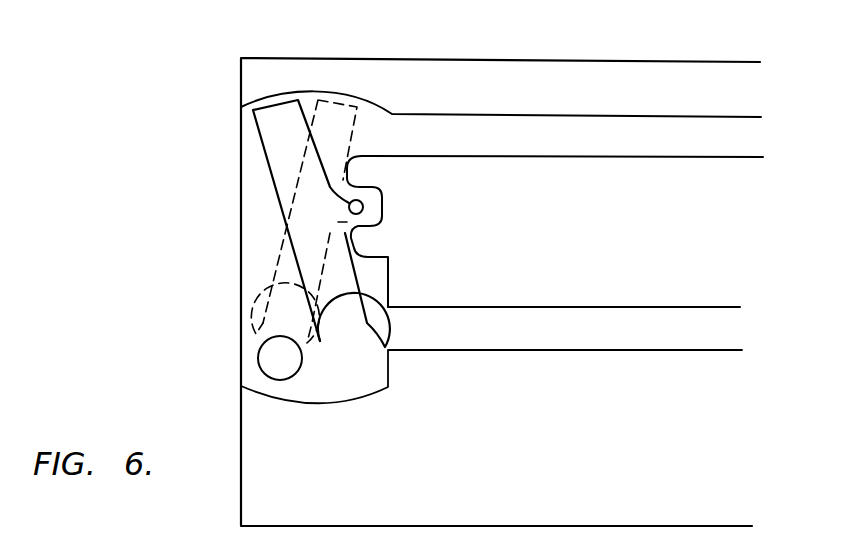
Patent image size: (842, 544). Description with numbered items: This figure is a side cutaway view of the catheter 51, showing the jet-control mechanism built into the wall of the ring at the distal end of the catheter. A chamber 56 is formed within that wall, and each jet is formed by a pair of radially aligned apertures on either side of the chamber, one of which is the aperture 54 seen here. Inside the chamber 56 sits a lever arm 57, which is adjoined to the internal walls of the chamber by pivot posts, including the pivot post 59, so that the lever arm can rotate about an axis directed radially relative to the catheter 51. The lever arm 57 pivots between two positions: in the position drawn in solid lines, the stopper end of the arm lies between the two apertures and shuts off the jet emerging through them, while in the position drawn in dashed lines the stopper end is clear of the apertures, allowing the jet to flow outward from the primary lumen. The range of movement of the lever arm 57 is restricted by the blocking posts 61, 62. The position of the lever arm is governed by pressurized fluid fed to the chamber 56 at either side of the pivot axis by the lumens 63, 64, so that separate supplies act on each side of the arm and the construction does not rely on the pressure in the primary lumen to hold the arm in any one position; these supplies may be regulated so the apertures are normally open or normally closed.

The catheter 51 is at (568, 57).
The aperture 54 is at (270, 360).
The chamber 56 is at (257, 168).
The lever arm 57 is at (282, 215).
The pivot post 59 is at (349, 205).
The blocking post 61 is at (362, 172).
The blocking post 62 is at (360, 241).
The lumen 63 is at (600, 145).
The lumen 64 is at (622, 327).